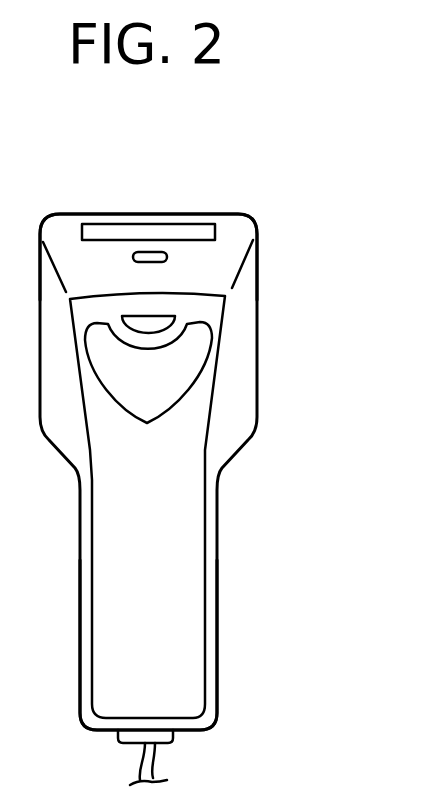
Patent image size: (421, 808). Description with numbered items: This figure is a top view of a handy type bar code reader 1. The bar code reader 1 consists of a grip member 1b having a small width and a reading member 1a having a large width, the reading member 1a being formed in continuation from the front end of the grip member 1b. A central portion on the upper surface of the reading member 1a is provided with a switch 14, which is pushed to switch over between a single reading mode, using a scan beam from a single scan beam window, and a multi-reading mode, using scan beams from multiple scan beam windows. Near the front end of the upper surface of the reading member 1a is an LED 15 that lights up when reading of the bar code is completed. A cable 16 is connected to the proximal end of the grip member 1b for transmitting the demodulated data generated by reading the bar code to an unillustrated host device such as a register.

The bar code reader 1 is at (247, 442).
The reading member 1a is at (257, 320).
The grip member 1b is at (217, 623).
The switch 14 is at (200, 378).
The LED 15 is at (163, 252).
The cable 16 is at (157, 760).